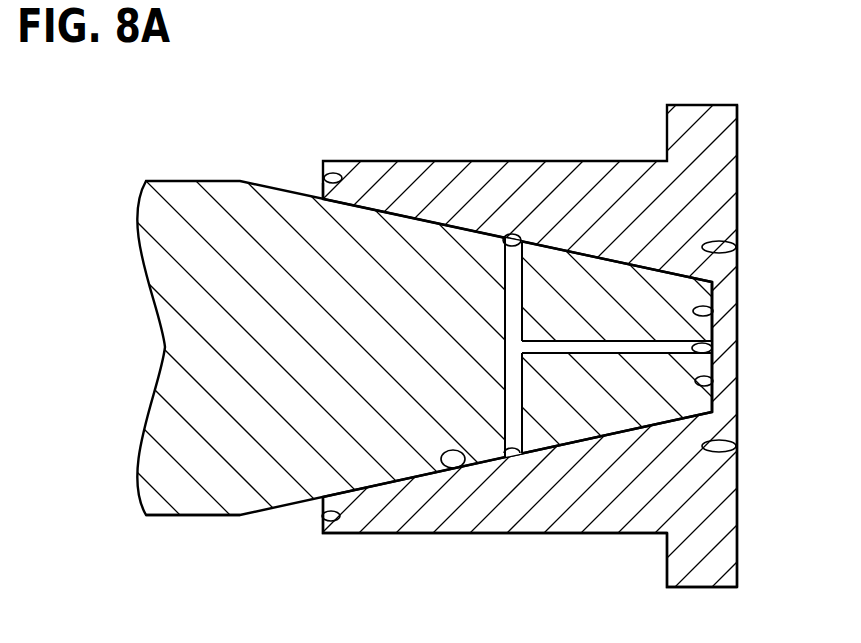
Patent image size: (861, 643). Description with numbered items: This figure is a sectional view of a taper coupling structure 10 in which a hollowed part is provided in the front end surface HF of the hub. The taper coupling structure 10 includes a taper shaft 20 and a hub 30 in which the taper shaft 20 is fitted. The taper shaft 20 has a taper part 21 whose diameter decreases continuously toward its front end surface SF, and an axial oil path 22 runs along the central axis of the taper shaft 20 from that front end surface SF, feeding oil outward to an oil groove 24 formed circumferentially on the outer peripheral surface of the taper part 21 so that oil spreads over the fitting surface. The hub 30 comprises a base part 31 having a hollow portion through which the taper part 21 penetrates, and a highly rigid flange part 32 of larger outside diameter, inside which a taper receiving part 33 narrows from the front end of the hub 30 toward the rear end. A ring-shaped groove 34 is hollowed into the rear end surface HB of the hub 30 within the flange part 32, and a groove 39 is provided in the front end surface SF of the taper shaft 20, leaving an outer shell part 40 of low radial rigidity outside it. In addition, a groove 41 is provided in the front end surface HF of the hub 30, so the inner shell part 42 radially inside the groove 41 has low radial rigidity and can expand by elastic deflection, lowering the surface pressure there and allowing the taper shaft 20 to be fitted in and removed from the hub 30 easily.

The taper coupling structure 10 is at (313, 95).
The taper shaft 20 is at (211, 175).
The taper part 21 is at (271, 517).
The axial oil path 22 is at (693, 346).
The oil groove 24 is at (511, 236).
The hub 30 is at (368, 155).
The base part 31 is at (391, 536).
The flange part 32 is at (668, 569).
The taper receiving part 33 is at (458, 462).
The groove 34 is at (732, 246).
The groove 39 is at (712, 311).
The outer shell part 40 is at (718, 398).
The groove 41 is at (322, 176).
The inner shell part 42 is at (320, 194).
The rear end surface HB is at (740, 189).
The front end surface HF is at (323, 527).
The front end surface SF is at (715, 369).